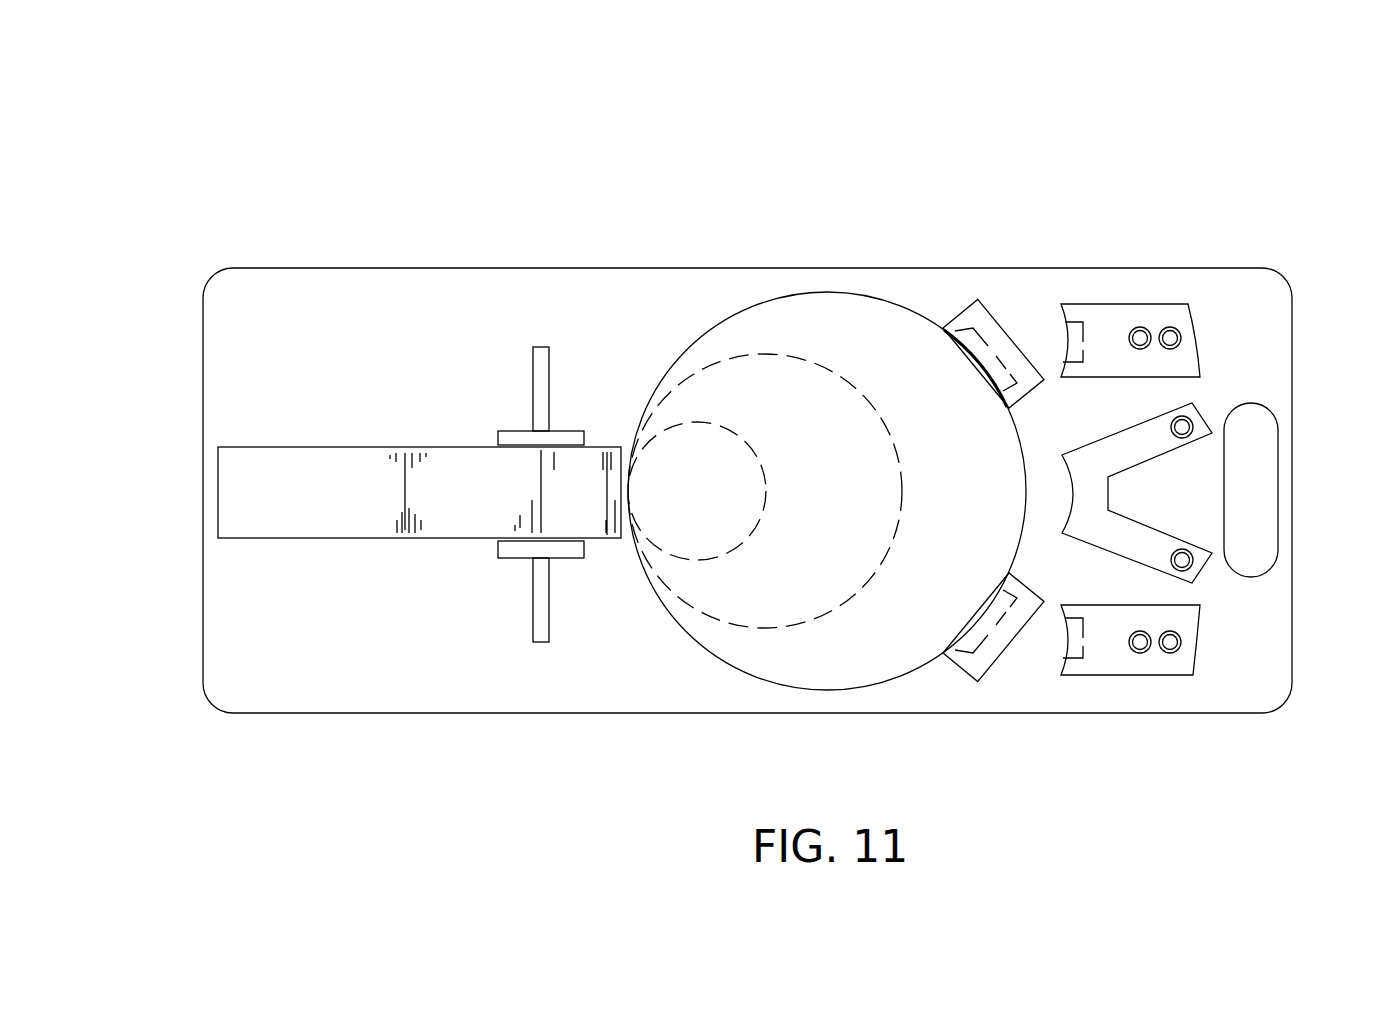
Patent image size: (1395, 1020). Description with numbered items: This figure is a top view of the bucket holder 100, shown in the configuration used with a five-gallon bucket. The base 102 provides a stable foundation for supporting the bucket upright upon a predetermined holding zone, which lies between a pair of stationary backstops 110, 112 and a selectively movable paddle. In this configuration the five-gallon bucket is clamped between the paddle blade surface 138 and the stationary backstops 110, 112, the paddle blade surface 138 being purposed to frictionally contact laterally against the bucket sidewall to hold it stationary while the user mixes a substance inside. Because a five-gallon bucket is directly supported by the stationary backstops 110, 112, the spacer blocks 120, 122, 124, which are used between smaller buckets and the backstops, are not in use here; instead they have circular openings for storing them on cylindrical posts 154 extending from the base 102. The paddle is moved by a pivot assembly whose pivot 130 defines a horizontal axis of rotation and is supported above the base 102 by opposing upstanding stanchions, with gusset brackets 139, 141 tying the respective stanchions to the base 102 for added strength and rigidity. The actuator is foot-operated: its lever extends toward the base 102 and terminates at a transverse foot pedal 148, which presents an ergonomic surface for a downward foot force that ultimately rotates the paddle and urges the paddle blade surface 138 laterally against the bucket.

The bucket holder 100 is at (724, 192).
The base 102 is at (286, 693).
The stationary backstop 110 is at (980, 670).
The stationary backstop 112 is at (962, 302).
The spacer block 120 is at (1111, 669).
The spacer block 122 is at (1112, 320).
The spacer block 124 is at (1100, 487).
The pivot 130 is at (512, 485).
The paddle blade surface 138 is at (620, 474).
The gusset bracket 139 is at (530, 623).
The gusset bracket 141 is at (540, 362).
The foot pedal 148 is at (246, 478).
The cylindrical post 154 is at (1172, 342).